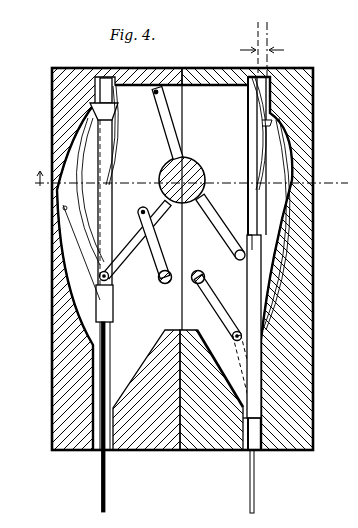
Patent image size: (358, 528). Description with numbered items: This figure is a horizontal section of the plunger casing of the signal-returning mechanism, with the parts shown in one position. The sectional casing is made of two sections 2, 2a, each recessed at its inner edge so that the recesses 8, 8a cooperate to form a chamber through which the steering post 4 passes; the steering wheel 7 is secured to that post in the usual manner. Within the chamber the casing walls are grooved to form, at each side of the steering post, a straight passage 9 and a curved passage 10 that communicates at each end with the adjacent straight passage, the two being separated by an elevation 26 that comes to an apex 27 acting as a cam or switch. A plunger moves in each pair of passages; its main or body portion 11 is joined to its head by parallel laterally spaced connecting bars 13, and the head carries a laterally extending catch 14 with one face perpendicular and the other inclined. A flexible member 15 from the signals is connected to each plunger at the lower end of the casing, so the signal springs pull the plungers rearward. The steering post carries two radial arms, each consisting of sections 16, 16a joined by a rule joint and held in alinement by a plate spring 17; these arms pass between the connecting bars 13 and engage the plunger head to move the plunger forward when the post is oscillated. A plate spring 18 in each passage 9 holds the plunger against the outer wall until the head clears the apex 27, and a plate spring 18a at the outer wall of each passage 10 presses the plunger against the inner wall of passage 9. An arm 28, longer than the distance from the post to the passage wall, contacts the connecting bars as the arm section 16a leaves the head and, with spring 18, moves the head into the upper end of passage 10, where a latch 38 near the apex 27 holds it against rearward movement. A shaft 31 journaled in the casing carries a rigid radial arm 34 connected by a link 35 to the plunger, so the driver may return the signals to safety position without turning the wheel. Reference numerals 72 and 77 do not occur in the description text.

The casing section 2 is at (153, 451).
The casing section 2a is at (215, 451).
The steering post 4 is at (186, 163).
The steering wheel 7 is at (250, 49).
The recess 8 is at (42, 372).
The recess 8a is at (258, 326).
The straight passage 9 is at (90, 462).
The curved passage 10 is at (68, 152).
The main or body portion 11 is at (96, 310).
The connecting bars 13 is at (95, 196).
The catch 14 is at (113, 104).
The flexible member 15 is at (256, 490).
The arm section 16 is at (173, 148).
The arm section 16a is at (170, 85).
The plate spring 17 is at (185, 110).
The plate spring 18 is at (108, 145).
The plate spring 18a is at (266, 288).
The elevation 26 is at (275, 160).
The apex 27 is at (268, 110).
The arm 28 is at (108, 76).
The shaft 31 is at (171, 274).
The radial arm 34 is at (212, 300).
The link 35 is at (158, 252).
The latch 38 is at (112, 112).
The wall 72 is at (92, 107).
The guide 77 is at (245, 150).